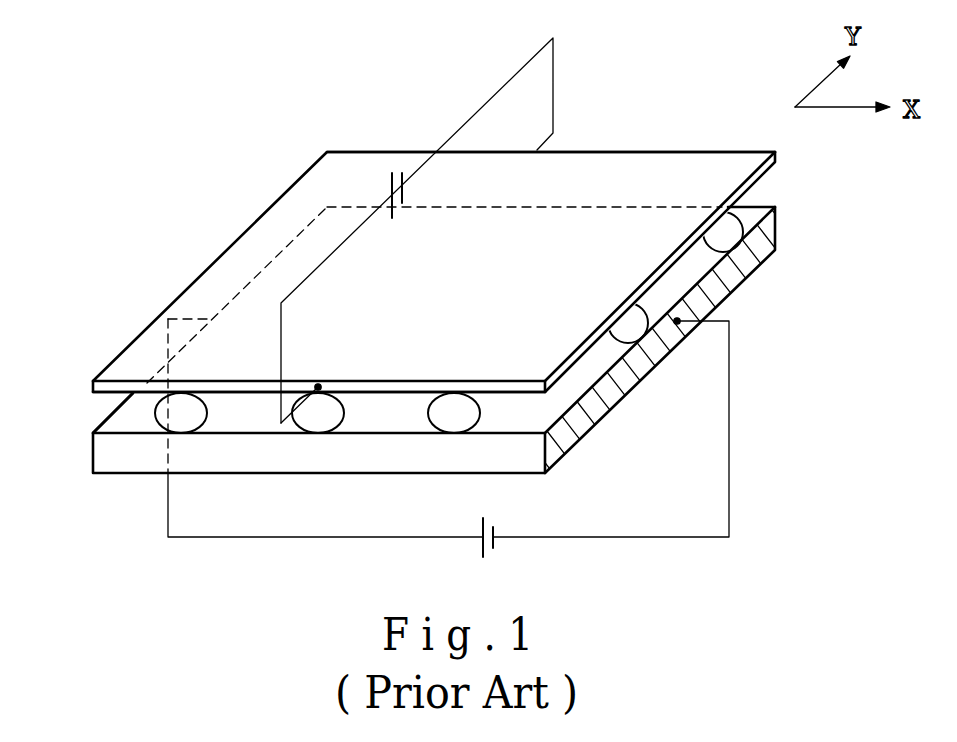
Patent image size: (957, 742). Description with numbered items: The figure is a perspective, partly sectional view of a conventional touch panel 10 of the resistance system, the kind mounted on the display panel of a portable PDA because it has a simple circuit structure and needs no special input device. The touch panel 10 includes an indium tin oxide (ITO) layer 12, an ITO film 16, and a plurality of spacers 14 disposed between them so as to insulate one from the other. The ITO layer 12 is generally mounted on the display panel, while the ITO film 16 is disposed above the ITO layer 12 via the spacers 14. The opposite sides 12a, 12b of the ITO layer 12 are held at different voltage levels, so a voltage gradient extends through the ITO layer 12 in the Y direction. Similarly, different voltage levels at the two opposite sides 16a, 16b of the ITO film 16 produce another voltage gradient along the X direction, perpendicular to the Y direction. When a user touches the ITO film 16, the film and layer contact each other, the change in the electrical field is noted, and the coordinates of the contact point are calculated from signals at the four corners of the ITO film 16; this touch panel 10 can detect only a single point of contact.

The touch panel 10 is at (441, 297).
The indium tin oxide (ITO) layer 12 is at (441, 326).
The side of the ITO layer 12a is at (613, 387).
The side of the ITO layer 12b is at (100, 423).
The spacers 14 is at (763, 250).
The ITO film 16 is at (434, 280).
The side of the ITO film 16a is at (388, 385).
The side of the ITO film 16b is at (625, 150).